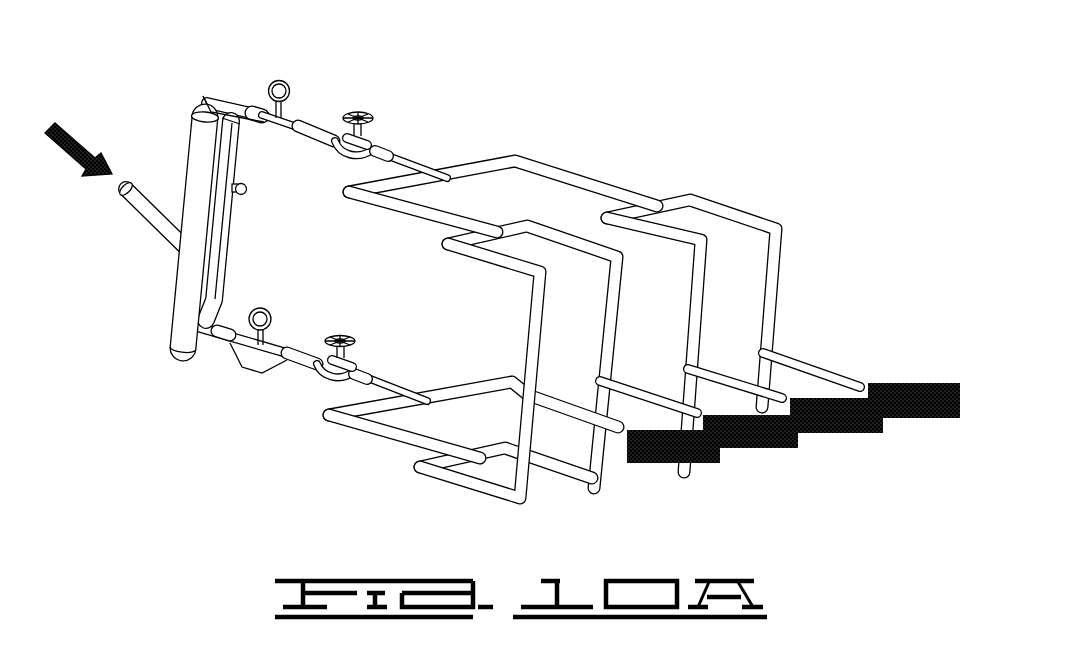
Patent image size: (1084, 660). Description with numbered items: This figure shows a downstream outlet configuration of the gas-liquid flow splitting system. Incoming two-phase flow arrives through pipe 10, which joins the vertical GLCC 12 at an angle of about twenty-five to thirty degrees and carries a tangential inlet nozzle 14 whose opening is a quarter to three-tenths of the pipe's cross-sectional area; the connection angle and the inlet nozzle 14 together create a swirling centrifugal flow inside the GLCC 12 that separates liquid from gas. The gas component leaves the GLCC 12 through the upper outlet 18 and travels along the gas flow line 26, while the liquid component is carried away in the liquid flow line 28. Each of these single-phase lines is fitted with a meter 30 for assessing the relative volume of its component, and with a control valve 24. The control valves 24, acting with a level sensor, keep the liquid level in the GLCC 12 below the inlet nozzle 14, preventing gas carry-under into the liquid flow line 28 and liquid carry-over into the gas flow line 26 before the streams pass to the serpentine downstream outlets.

The pipe 10 is at (133, 212).
The GLCC 12 is at (187, 163).
The tangential inlet nozzle 14 is at (178, 238).
The upper outlet 18 is at (203, 105).
The control valves 24 is at (372, 113).
The gas flow line 26 is at (317, 123).
The liquid flow line 28 is at (303, 370).
The meters 30 is at (279, 79).